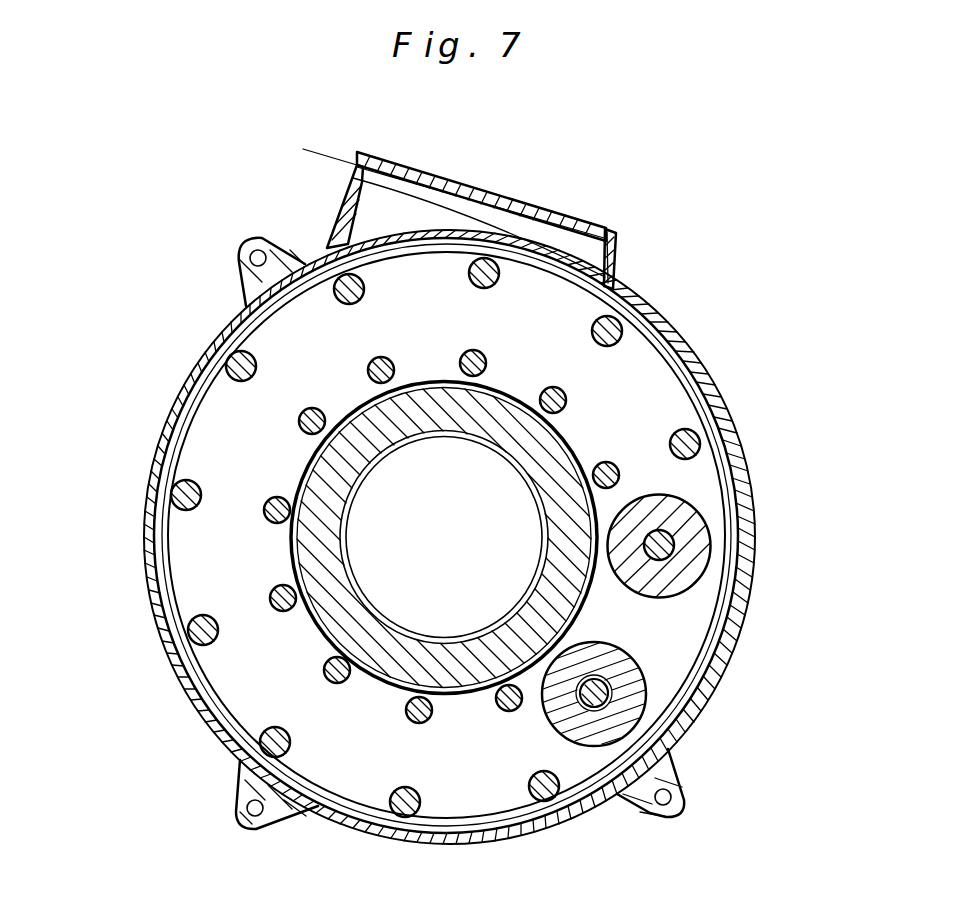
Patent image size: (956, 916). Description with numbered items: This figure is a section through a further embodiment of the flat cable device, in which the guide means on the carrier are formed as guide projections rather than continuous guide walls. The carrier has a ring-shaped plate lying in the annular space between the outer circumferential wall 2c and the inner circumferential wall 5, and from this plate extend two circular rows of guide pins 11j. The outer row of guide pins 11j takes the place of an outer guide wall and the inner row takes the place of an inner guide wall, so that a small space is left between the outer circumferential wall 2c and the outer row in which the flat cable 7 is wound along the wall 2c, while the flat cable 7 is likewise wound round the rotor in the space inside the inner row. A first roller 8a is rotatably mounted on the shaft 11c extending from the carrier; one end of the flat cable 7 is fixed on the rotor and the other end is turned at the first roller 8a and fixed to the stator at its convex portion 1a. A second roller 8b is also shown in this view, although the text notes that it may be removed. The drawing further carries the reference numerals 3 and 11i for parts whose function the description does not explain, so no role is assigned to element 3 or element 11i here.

The flat cable 7 is at (308, 156).
The convex portion 1a is at (594, 232).
The shaft 11c is at (650, 522).
The first roller 8a is at (686, 506).
The housing wall 3 is at (740, 432).
The outer circumferential wall 2c is at (740, 520).
The second roller 8b is at (630, 676).
The inner circumferential wall 5 is at (392, 665).
The bolt 11i is at (185, 512).
The guide pins 11j is at (186, 479).